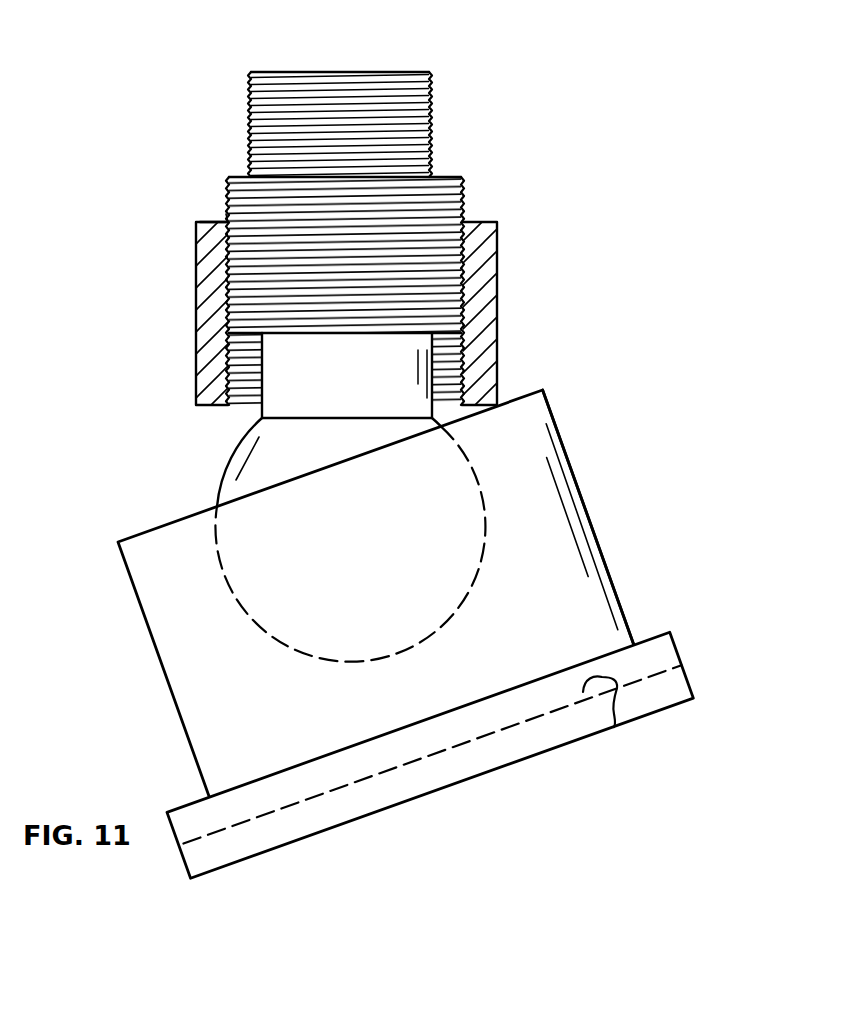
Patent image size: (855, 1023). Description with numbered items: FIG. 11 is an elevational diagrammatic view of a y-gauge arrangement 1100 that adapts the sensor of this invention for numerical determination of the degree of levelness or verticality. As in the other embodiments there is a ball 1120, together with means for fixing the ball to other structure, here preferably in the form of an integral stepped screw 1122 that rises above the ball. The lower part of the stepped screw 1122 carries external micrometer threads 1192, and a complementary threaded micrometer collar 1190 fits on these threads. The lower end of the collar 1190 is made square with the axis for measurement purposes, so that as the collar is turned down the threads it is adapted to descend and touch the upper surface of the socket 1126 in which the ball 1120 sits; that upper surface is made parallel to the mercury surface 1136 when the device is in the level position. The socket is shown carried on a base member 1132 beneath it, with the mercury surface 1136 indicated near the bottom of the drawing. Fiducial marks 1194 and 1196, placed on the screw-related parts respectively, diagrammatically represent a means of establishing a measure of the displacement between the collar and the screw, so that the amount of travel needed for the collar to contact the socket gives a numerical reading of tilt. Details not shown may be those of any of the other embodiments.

The threaded connector assembly 1100 is at (446, 64).
The integral stepped screw 1122 is at (431, 131).
The external micrometer threads 1192 is at (463, 196).
The micrometer collar 1190 is at (498, 250).
The fiducial mark 1194 is at (228, 218).
The fiducial mark 1196 is at (228, 222).
The ball 1120 is at (237, 453).
The socket 1126 is at (564, 440).
The mounting bar 1132 is at (655, 636).
The mercury surface 1136 is at (614, 727).